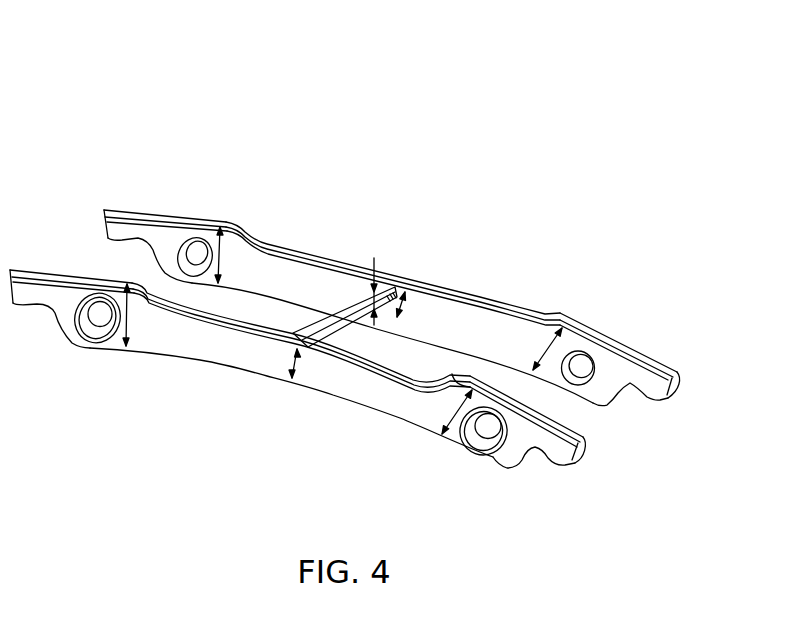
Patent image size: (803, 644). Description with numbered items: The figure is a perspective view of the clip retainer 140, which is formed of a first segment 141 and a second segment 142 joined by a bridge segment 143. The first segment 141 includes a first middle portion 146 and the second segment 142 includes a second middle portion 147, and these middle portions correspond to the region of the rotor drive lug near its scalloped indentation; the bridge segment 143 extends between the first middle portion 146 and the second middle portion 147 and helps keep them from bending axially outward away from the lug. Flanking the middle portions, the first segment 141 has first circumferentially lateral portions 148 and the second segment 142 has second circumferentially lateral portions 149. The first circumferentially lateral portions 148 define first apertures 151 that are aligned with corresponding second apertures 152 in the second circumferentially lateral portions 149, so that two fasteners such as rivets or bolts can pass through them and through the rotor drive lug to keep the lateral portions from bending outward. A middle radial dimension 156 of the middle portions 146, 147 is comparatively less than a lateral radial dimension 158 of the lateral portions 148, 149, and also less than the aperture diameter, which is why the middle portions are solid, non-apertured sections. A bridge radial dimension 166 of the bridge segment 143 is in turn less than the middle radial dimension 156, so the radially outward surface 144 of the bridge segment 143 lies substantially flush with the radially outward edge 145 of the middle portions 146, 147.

The clip retainer 140 is at (110, 68).
The first segment 141 is at (593, 463).
The second segment 142 is at (675, 409).
The bridge segment 143 is at (296, 316).
The radially outward surface 144 is at (333, 312).
The radially outward edge 145 is at (265, 236).
The first middle portion 146 is at (368, 428).
The second middle portion 147 is at (392, 292).
The first circumferentially lateral portions 148 is at (43, 378).
The second circumferentially lateral portions 149 is at (262, 218).
The first apertures 151 is at (100, 323).
The second apertures 152 is at (192, 262).
The middle radial dimension 156 is at (407, 292).
The lateral radial dimension 158 is at (223, 250).
The bridge radial dimension 166 is at (363, 270).